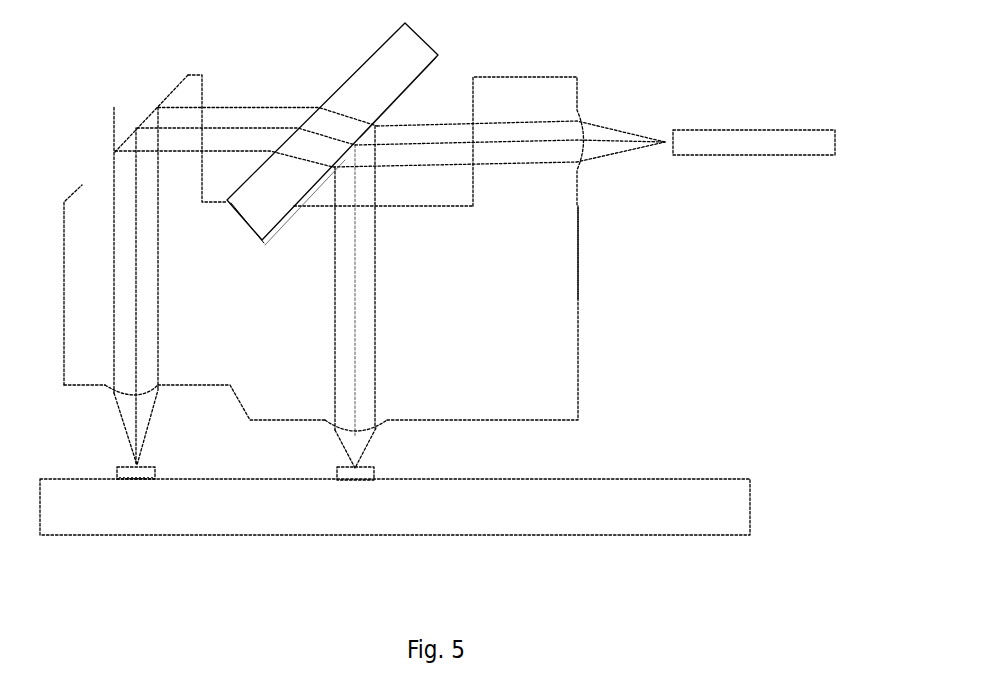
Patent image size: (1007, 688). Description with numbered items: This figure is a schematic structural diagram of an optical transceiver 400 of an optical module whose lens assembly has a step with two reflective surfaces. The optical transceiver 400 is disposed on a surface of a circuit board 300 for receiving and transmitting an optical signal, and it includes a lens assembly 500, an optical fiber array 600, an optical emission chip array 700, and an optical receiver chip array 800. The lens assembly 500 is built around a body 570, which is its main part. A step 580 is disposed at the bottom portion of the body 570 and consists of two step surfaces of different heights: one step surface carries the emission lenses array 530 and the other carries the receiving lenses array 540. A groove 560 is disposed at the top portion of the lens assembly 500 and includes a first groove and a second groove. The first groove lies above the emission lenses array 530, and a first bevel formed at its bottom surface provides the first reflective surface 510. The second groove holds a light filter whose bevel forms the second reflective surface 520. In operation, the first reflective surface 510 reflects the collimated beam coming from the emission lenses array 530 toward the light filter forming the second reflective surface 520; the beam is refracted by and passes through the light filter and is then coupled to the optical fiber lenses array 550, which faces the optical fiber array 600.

The circuit board 300 is at (677, 478).
The optical transceiver 400 is at (642, 310).
The lens assembly 500 is at (275, 84).
The first reflective surface 510 is at (140, 118).
The second reflective surface 520 is at (440, 54).
The emission lenses array 530 is at (105, 388).
The receiving lenses array 540 is at (382, 407).
The optical fiber lenses array 550 is at (580, 115).
The groove 560 is at (433, 212).
The body 570 is at (553, 243).
The step 580 is at (250, 393).
The optical fiber array 600 is at (742, 128).
The optical emission chip array 700 is at (160, 475).
The optical receiver chip array 800 is at (377, 477).